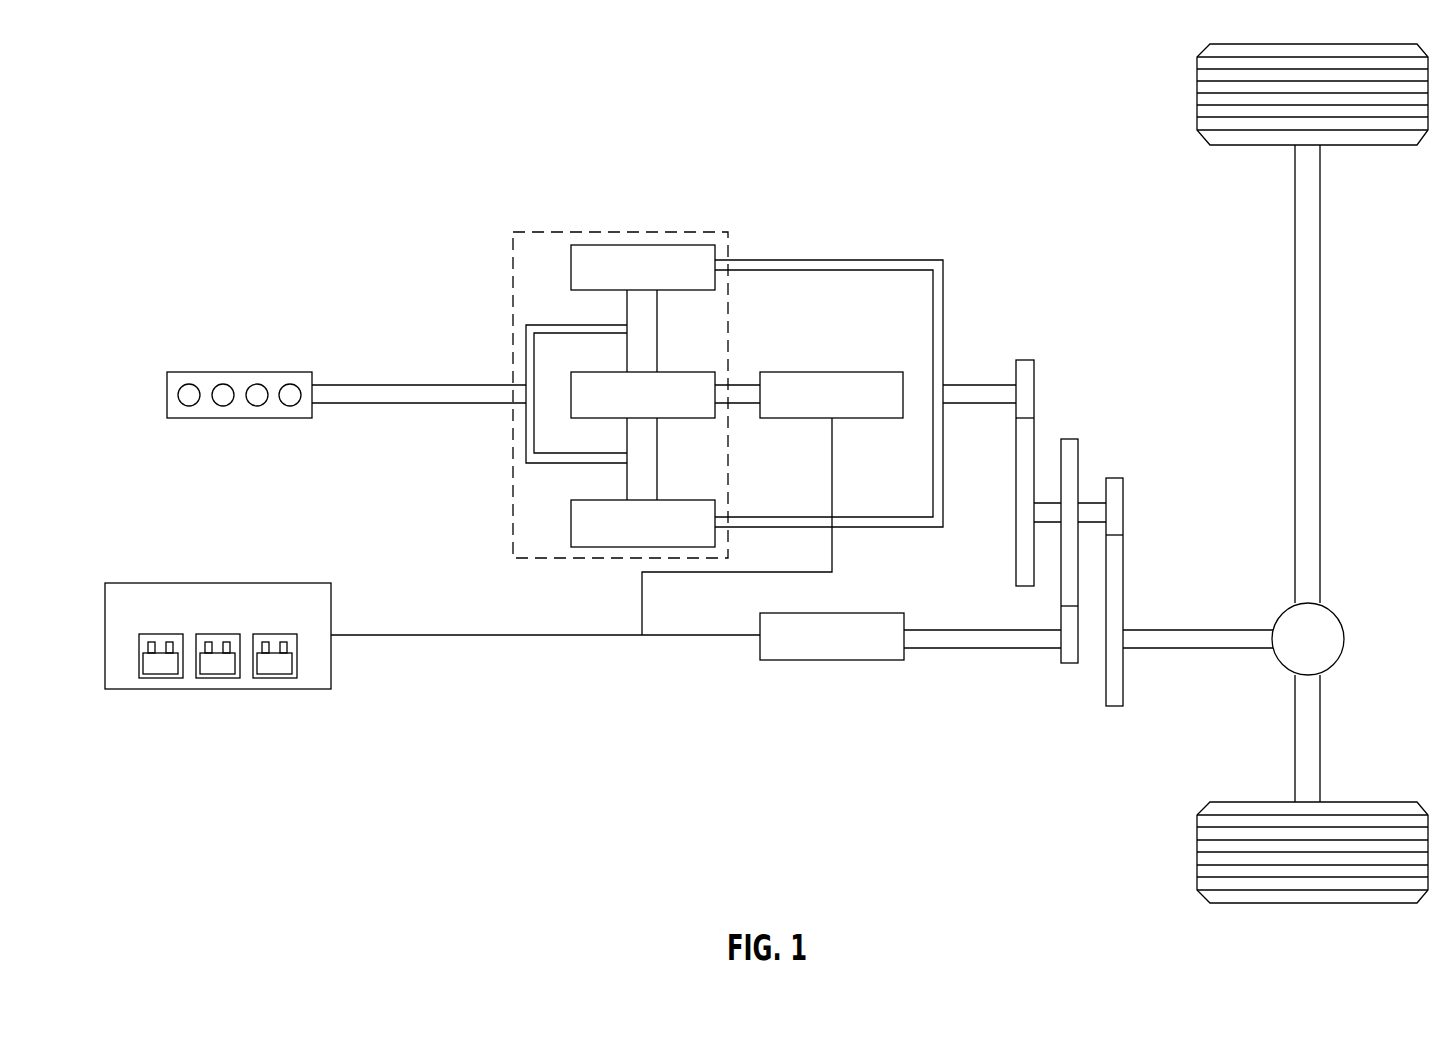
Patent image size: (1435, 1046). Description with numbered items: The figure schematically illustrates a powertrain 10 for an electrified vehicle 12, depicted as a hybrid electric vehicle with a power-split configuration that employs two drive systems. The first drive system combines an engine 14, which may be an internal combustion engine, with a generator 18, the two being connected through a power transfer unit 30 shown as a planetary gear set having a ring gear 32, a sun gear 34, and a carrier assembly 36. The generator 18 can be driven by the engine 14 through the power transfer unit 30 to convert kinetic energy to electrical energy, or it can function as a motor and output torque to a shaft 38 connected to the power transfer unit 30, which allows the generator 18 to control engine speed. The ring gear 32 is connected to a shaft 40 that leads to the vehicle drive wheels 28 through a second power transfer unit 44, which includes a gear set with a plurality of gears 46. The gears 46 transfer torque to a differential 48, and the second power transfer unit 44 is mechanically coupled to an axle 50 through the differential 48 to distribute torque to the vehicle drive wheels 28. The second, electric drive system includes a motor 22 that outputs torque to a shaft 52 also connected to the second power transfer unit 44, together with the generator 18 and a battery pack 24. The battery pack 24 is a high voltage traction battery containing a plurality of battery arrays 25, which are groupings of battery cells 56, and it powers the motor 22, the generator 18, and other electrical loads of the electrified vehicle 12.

The powertrain 10 is at (204, 131).
The electrified vehicle 12 is at (858, 195).
The engine 14 is at (222, 420).
The generator 18 is at (852, 372).
The motor 22 is at (817, 613).
The battery pack 24 is at (307, 583).
The battery arrays 25 is at (158, 634).
The vehicle drive wheels 28 is at (1197, 93).
The power transfer unit 30 is at (564, 228).
The ring gear 32 is at (643, 245).
The sun gear 34 is at (614, 372).
The carrier assembly 36 is at (526, 430).
The shaft 38 is at (744, 383).
The shaft 40 is at (957, 403).
The second power transfer unit 44 is at (1151, 356).
The gears 46 is at (1023, 359).
The differential 48 is at (1345, 640).
The axle 50 is at (1320, 420).
The shaft 52 is at (925, 650).
The battery cells 56 is at (158, 668).